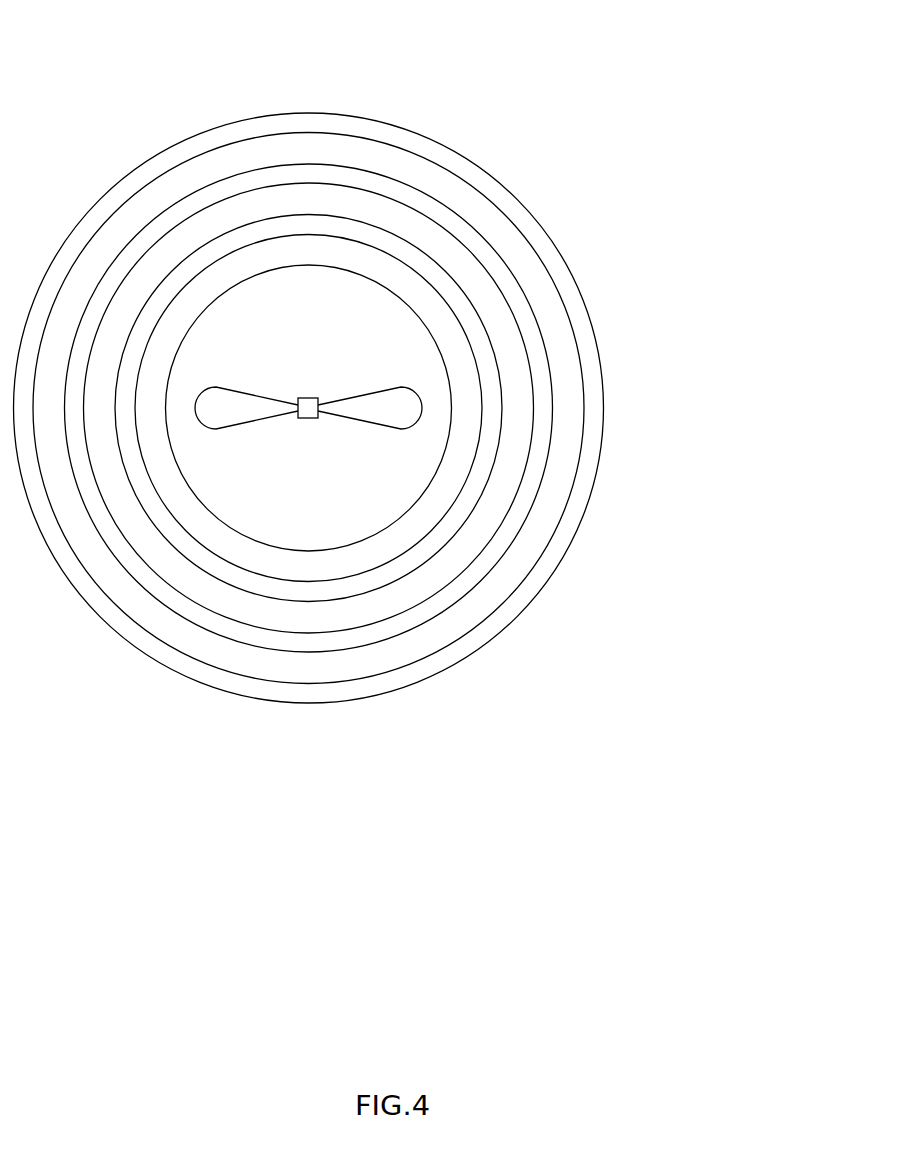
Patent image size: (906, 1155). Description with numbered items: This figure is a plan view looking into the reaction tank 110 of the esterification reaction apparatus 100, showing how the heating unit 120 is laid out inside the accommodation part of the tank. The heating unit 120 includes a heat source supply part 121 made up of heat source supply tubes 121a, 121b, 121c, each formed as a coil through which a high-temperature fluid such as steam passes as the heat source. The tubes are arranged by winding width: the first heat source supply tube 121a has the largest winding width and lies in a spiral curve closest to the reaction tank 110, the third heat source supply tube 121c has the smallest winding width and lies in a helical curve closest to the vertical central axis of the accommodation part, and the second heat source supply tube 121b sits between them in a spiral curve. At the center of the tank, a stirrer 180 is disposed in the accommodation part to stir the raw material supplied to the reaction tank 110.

The esterification reaction apparatus 100 is at (554, 31).
The reaction tank 110 is at (498, 180).
The heating unit 120 is at (422, 408).
The heat source supply part 121 is at (422, 408).
The first heat source supply tube 121a is at (563, 367).
The second heat source supply tube 121b is at (513, 408).
The third heat source supply tube 121c is at (462, 449).
The stirrer 180 is at (308, 390).